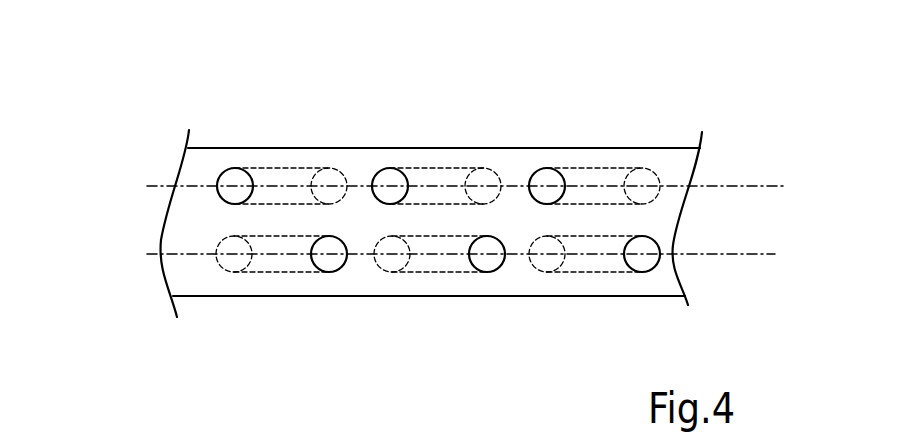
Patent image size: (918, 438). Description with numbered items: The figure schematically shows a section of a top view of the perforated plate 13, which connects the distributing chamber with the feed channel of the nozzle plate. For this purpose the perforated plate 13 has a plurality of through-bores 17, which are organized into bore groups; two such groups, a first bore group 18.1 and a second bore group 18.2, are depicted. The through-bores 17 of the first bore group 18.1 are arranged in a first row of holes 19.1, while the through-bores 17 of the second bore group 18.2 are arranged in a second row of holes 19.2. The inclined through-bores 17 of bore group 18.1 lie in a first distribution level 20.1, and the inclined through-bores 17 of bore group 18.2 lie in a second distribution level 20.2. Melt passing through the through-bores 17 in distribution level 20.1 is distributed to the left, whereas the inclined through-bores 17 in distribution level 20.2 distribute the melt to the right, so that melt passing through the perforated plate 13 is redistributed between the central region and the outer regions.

The perforated plate 13 is at (206, 282).
The through-bores 17 is at (221, 172).
The first bore group 18.1 is at (543, 262).
The second bore group 18.2 is at (545, 174).
The first row of holes 19.1 is at (157, 277).
The second row of holes 19.2 is at (165, 163).
The first distribution level 20.1 is at (758, 253).
The second distribution level 20.2 is at (758, 187).